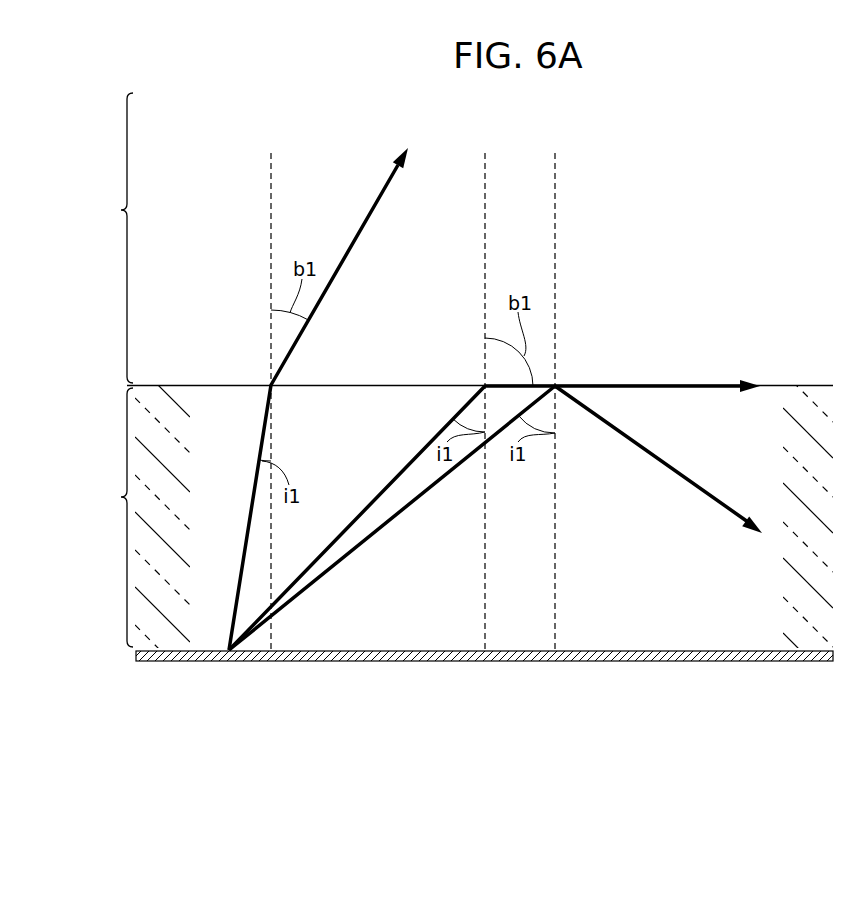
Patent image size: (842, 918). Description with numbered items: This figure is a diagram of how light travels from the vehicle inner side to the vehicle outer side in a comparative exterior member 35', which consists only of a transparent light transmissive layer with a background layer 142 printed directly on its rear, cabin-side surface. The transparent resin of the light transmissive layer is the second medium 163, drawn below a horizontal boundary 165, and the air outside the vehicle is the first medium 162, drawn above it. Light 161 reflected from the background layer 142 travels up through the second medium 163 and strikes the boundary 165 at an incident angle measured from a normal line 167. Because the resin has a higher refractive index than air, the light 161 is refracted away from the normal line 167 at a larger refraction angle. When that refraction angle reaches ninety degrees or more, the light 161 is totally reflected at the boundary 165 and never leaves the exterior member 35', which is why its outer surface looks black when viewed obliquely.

The exterior member 35' is at (476, 559).
The background layer 142 is at (458, 662).
The light 161 is at (246, 535).
The first medium 162 is at (106, 238).
The second medium 163 is at (106, 517).
The boundary 165 is at (150, 385).
The normal line 167 is at (270, 163).